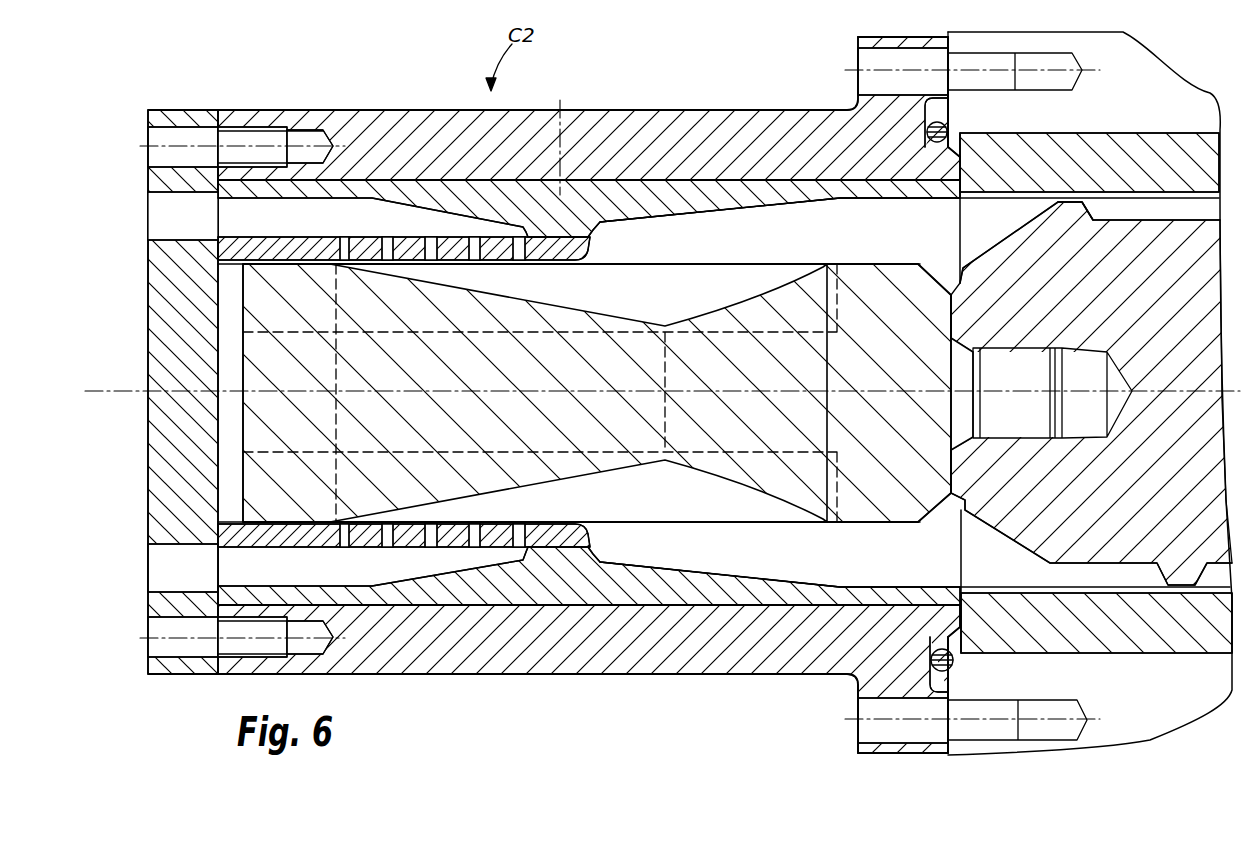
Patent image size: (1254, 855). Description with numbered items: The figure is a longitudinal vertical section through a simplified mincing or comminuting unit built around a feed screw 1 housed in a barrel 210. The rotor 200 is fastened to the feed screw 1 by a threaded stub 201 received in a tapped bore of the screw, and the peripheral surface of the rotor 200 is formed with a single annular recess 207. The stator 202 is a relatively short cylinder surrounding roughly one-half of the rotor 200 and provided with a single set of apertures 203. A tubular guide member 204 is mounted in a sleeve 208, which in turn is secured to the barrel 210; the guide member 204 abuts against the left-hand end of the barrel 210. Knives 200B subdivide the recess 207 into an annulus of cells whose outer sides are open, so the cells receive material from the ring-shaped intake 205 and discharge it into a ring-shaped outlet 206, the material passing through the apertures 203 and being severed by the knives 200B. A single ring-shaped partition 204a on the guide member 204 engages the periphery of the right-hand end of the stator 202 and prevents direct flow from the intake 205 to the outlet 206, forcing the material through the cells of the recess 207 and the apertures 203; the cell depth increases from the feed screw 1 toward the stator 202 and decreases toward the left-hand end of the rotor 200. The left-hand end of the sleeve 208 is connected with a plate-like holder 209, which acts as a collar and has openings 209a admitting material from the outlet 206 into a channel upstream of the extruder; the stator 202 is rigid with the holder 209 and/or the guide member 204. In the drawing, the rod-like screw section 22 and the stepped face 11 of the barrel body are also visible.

The feed screw 1 is at (1162, 315).
The notch 11 is at (1080, 206).
The rod 22 is at (390, 394).
The rotor 200 is at (808, 422).
The knives 200B is at (630, 263).
The threaded stub 201 is at (1008, 417).
The stator 202 is at (468, 553).
The apertures 203 is at (438, 548).
The tubular guide member 204 is at (668, 590).
The ring-shaped partition 204a is at (603, 551).
The ring-shaped intake 205 is at (752, 233).
The ring-shaped outlet 206 is at (340, 220).
The annular recess 207 is at (690, 492).
The sleeve 208 is at (530, 125).
The plate-like holder 209 is at (190, 117).
The openings 209a is at (160, 223).
The barrel 210 is at (1087, 163).